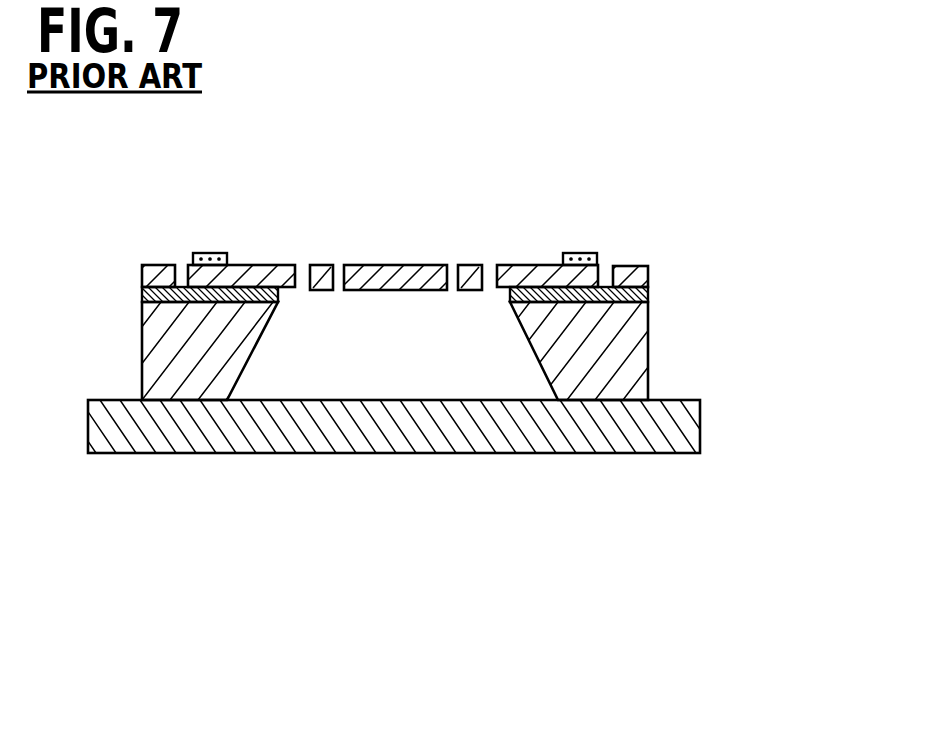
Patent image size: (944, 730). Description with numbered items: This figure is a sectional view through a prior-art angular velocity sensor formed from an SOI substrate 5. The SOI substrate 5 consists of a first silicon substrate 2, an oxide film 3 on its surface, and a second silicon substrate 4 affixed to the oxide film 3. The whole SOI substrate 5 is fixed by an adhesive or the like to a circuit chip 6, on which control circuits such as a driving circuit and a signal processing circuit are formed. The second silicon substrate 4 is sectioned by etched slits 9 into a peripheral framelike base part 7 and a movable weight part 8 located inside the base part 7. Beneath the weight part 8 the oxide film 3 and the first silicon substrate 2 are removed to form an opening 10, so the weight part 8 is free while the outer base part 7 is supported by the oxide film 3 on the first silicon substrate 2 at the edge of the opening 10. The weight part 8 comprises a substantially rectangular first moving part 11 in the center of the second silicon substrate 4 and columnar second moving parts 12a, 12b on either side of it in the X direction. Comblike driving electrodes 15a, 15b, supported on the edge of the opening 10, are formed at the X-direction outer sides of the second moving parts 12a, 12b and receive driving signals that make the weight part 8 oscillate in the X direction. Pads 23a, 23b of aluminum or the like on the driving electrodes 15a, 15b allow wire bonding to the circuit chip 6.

The first silicon substrate 2 is at (648, 333).
The oxide film 3 is at (648, 295).
The second silicon substrate 4 is at (429, 226).
The SOI substrate 5 is at (425, 283).
The circuit chip 6 is at (700, 430).
The base part 7 is at (155, 265).
The weight part 8 is at (404, 204).
The slits 9 is at (298, 262).
The opening 10 is at (390, 320).
The first moving part 11 is at (392, 265).
The second moving part 12a is at (471, 236).
The second moving part 12b is at (327, 265).
The driving electrode 15a is at (540, 265).
The driving electrode 15b is at (248, 265).
The driving electrode pad 23a is at (592, 253).
The driving electrode pad 23b is at (197, 252).